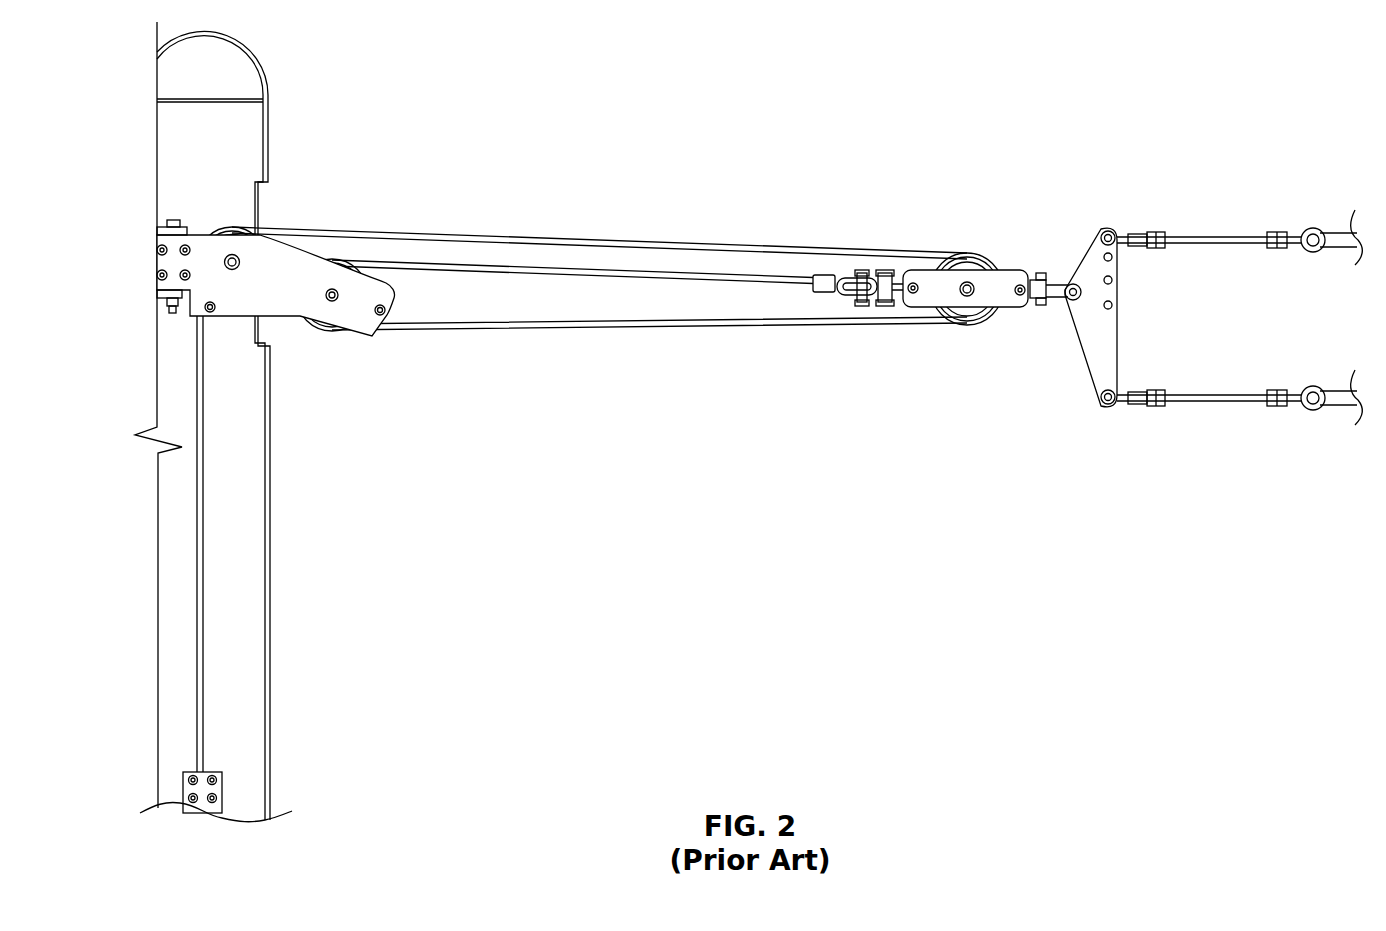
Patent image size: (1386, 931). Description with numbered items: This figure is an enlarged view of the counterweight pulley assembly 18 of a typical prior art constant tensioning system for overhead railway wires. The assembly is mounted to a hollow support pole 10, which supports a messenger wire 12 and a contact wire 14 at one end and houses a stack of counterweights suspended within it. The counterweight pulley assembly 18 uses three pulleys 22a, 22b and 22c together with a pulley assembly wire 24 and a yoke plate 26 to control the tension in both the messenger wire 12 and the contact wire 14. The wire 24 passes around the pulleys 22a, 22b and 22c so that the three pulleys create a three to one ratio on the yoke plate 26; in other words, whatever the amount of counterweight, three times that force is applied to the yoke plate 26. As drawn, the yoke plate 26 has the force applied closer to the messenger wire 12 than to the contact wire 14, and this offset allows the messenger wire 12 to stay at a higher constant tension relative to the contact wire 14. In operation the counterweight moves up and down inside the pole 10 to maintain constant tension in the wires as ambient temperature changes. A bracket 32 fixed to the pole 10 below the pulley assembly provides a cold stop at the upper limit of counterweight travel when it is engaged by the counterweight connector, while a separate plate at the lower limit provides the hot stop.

The pole 10 is at (257, 58).
The messenger wire 12 is at (1347, 232).
The contact wire 14 is at (1345, 403).
The counterweight pulley assembly 18 is at (118, 284).
The pulley 22a is at (233, 224).
The pulley 22b is at (322, 333).
The pulley 22c is at (965, 327).
The pulley assembly wire 24 is at (637, 242).
The yoke plate 26 is at (1085, 262).
The bracket 32 is at (185, 790).